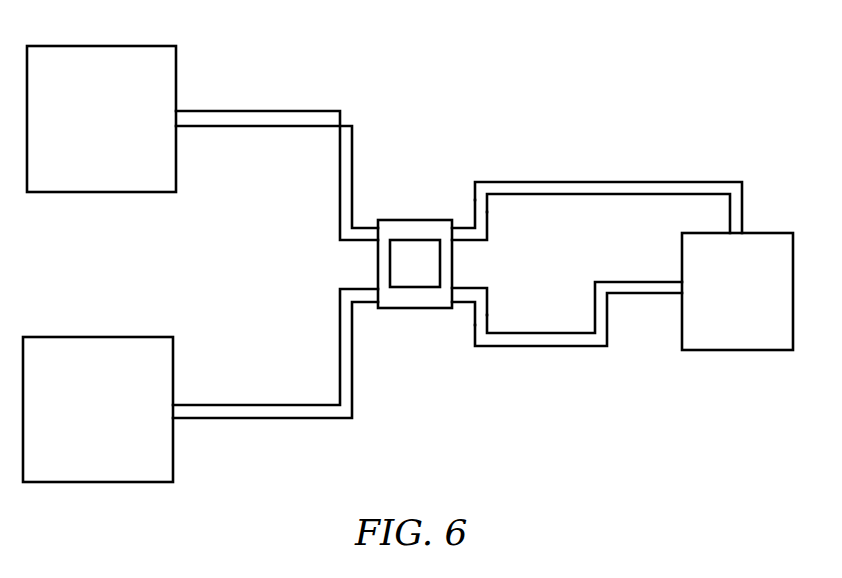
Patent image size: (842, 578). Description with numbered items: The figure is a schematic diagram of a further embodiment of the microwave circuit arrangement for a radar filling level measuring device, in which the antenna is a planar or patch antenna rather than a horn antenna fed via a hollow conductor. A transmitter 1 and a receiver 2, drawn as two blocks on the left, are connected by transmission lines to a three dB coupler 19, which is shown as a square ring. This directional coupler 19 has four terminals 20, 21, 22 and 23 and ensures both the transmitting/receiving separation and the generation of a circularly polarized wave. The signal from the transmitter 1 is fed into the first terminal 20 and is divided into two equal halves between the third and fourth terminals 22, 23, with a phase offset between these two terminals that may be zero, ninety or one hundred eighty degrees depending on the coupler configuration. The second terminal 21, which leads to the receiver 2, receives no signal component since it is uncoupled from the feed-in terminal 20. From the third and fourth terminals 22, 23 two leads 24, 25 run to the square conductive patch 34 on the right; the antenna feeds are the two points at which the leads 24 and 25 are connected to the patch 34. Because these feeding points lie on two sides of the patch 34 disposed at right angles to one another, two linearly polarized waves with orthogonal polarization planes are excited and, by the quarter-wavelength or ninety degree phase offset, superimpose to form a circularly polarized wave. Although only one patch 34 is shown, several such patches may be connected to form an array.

The transmitter (TX) 1 is at (183, 73).
The receiver (RX) 2 is at (178, 375).
The 3 dB coupler 19 is at (418, 205).
The first terminal 20 is at (375, 218).
The second terminal 21 is at (372, 310).
The third terminal 22 is at (457, 218).
The fourth terminal 23 is at (455, 310).
The lead 24 is at (577, 188).
The lead 25 is at (550, 343).
The square conductive patch 34 is at (765, 350).